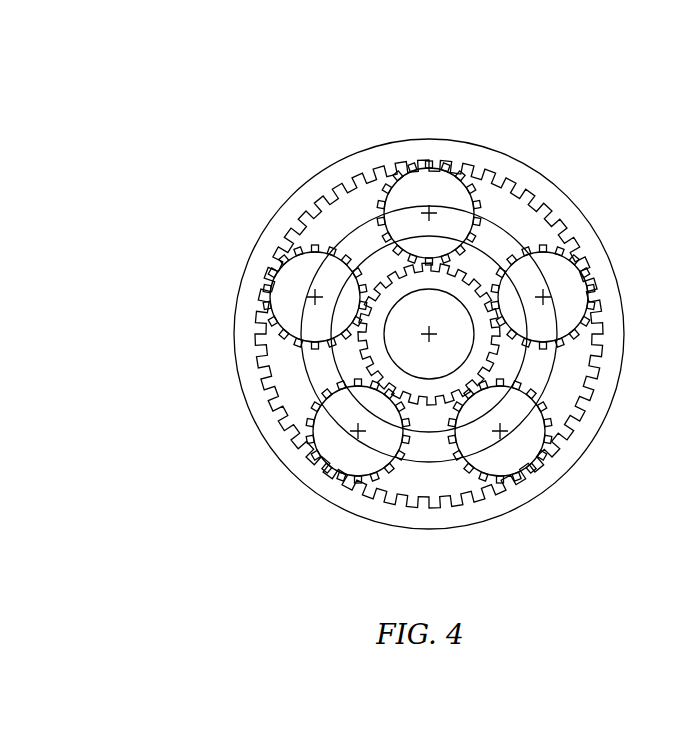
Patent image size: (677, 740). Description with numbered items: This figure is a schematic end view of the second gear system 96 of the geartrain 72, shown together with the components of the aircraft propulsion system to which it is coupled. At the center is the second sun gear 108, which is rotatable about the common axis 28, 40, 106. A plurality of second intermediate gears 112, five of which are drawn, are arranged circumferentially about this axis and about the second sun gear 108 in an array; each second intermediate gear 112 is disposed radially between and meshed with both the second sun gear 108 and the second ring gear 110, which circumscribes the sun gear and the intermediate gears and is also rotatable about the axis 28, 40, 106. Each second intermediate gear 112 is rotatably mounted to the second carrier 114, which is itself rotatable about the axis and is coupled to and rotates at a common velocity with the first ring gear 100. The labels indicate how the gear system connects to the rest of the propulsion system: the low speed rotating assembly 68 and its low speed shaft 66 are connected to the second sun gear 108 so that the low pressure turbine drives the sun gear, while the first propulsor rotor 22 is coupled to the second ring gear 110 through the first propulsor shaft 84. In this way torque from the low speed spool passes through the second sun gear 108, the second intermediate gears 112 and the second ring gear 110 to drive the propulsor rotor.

The first propulsor rotor 22 is at (340, 282).
The first propulsor shaft 84 is at (357, 155).
The first ring gear 100 is at (310, 280).
The low speed shaft 66 is at (288, 416).
The low speed rotating assembly 68 is at (356, 345).
The second sun gear 108 is at (366, 356).
The second ring gear 110 is at (405, 139).
The second intermediate gears 112 is at (300, 247).
The second carrier 114 is at (350, 228).
The geartrain 72 is at (377, 312).
The second gear system 96 is at (566, 131).
The axis 28 is at (430, 429).
The core axis 40 is at (430, 429).
The axis 106 is at (429, 334).